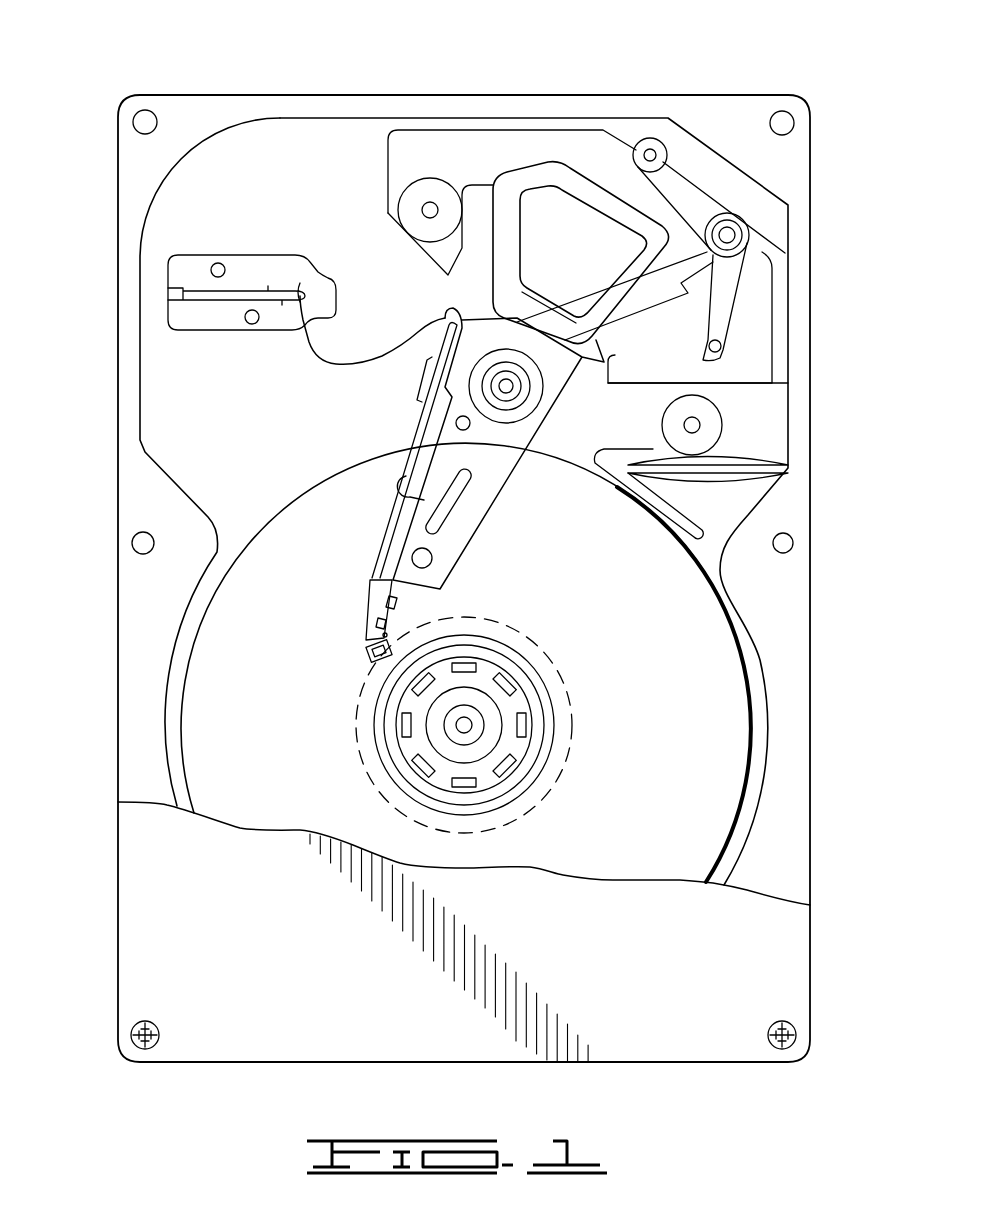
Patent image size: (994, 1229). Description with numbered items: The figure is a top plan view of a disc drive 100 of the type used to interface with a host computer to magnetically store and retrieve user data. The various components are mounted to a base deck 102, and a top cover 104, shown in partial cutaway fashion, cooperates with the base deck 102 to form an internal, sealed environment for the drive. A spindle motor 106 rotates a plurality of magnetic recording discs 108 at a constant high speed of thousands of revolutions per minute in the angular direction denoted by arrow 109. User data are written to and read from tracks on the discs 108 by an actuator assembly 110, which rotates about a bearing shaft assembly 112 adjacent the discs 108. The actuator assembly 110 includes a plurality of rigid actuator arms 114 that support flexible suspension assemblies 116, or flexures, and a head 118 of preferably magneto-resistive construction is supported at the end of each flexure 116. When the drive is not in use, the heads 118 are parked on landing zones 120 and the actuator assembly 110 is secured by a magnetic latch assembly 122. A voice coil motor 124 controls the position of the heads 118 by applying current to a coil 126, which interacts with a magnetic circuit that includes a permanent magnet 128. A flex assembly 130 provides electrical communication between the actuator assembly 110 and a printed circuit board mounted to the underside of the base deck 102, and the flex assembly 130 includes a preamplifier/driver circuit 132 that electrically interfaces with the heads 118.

The disc drive 100 is at (212, 50).
The base deck 102 is at (178, 405).
The top cover 104 is at (170, 873).
The spindle motor 106 is at (507, 710).
The magnetic recording discs 108 is at (728, 738).
The arrow 109 is at (257, 770).
The actuator assembly 110 is at (483, 446).
The bearing shaft assembly 112 is at (512, 400).
The actuator arms 114 is at (462, 520).
The suspension assemblies 116 is at (392, 605).
The head 118 is at (372, 648).
The landing zones 120 is at (576, 793).
The magnetic latch assembly 122 is at (727, 283).
The voice coil motor 124 is at (590, 148).
The coil 126 is at (533, 170).
The permanent magnet 128 is at (677, 362).
The flex assembly 130 is at (353, 357).
The preamplifier/driver circuit 132 is at (417, 377).